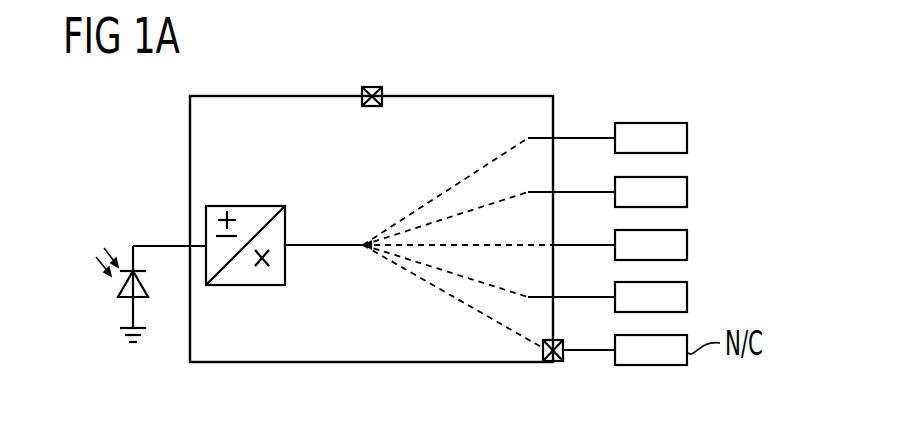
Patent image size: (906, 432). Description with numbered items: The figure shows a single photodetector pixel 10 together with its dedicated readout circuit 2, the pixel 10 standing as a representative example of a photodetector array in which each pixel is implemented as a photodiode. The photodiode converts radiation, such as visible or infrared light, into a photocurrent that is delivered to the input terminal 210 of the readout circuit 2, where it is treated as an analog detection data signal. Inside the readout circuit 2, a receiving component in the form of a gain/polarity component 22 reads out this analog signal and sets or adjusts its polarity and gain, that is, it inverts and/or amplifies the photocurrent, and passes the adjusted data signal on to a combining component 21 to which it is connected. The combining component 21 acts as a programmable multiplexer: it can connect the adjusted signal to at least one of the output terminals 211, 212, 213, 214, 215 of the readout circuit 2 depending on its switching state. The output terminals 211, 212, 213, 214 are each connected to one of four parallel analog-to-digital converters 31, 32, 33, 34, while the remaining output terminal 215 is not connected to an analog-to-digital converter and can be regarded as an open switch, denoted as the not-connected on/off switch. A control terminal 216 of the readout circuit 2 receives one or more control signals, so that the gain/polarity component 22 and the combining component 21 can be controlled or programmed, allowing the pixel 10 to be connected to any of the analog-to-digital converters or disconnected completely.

The readout circuit 2 is at (190, 143).
The photodetector pixel 10 is at (122, 282).
The combining component 21 is at (465, 181).
The gain/polarity component 22 is at (246, 206).
The analog-to-digital converter 31 is at (688, 141).
The analog-to-digital converter 32 is at (688, 195).
The analog-to-digital converter 33 is at (688, 248).
The analog-to-digital converter 34 is at (688, 300).
The input terminal 210 is at (166, 246).
The output terminal 211 is at (553, 137).
The output terminal 212 is at (584, 177).
The output terminal 213 is at (553, 244).
The output terminal 214 is at (553, 296).
The output terminal 215 is at (555, 362).
The control terminal 216 is at (372, 87).